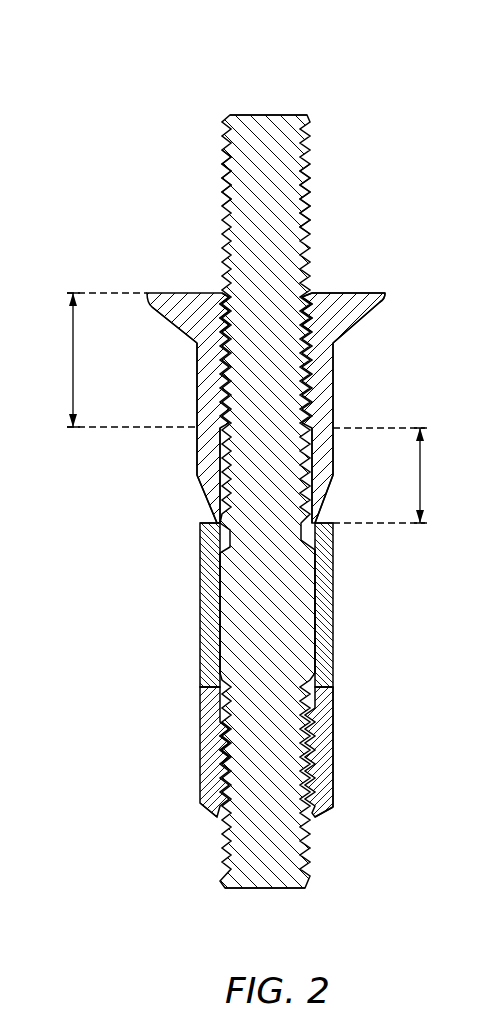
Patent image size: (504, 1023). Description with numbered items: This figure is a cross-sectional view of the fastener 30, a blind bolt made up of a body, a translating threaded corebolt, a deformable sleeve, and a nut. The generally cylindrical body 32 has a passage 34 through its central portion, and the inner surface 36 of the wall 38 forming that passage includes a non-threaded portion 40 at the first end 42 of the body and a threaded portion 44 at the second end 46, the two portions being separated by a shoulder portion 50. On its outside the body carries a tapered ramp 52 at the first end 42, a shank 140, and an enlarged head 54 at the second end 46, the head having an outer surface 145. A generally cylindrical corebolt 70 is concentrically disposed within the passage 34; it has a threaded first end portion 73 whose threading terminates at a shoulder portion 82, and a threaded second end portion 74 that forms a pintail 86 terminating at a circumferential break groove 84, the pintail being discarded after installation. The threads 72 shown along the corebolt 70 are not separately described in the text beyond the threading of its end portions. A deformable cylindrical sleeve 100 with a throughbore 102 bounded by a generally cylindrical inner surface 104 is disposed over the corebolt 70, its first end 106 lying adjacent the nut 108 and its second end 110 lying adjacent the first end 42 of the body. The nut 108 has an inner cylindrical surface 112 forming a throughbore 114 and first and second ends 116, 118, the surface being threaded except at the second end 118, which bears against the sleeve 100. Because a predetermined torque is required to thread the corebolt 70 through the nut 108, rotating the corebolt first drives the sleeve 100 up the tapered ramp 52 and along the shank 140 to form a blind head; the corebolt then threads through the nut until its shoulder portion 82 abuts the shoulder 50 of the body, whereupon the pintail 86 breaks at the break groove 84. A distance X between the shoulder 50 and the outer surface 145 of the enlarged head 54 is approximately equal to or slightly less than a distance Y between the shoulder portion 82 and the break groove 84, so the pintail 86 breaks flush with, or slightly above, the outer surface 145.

The fastener 30 is at (122, 121).
The corebolt 70 is at (307, 170).
The external threads of bolt 72 is at (307, 220).
The second end portion 74 is at (307, 118).
The first end portion 73 is at (308, 882).
The pintail 86 is at (222, 188).
The body 32 is at (333, 363).
The second end 46 is at (386, 297).
The outer surface 145 is at (356, 293).
The passage 34 is at (313, 293).
The threaded portion 44 is at (221, 293).
The enlarged head 54 is at (170, 322).
The break groove 84 is at (199, 395).
The shank 140 is at (333, 407).
The shoulder portion 50 is at (219, 440).
The wall 38 is at (313, 440).
The non-threaded portion 40 is at (199, 479).
The tapered ramp 52 is at (332, 488).
The first end 42 is at (205, 496).
The inner surface 36 is at (313, 498).
The sleeve 100 is at (334, 621).
The second end 110 is at (199, 545).
The shoulder portion 82 is at (333, 546).
The throughbore 102 is at (226, 622).
The inner surface 104 is at (313, 640).
The first end 106 is at (199, 665).
The second end 118 is at (334, 690).
The nut 108 is at (334, 746).
The first end 116 is at (334, 803).
The throughbore 114 is at (220, 740).
The inner cylindrical surface 112 is at (210, 808).
The distance X is at (73, 357).
The distance Y is at (421, 475).